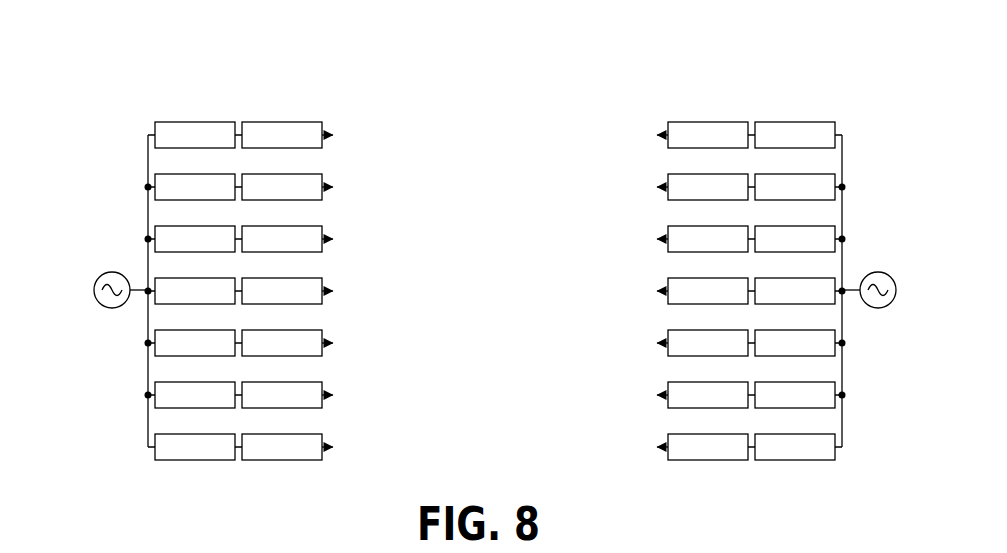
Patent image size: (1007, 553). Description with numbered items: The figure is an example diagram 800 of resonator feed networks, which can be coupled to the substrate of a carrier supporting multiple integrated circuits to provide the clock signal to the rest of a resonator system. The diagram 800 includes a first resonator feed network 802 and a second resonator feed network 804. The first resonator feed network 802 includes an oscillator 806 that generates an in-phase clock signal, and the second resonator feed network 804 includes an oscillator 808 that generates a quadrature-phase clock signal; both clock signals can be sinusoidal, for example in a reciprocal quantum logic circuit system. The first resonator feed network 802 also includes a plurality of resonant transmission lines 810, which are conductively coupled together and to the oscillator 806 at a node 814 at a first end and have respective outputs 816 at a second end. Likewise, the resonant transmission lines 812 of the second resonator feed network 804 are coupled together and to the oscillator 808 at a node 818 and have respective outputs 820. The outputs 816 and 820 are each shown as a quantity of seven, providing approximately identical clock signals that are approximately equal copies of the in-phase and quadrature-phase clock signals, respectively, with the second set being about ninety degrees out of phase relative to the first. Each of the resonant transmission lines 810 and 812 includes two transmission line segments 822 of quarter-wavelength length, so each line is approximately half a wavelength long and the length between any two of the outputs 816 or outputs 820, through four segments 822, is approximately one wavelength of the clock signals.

The diagram 800 is at (123, 41).
The first resonator feed network 802 is at (364, 71).
The second resonator feed network 804 is at (621, 71).
The oscillator 806 is at (112, 308).
The oscillator 808 is at (878, 308).
The resonant transmission lines 810 is at (238, 94).
The resonant transmission lines 812 is at (753, 95).
The node 814 is at (148, 213).
The outputs 816 is at (419, 164).
The node 818 is at (843, 210).
The outputs 820 is at (573, 380).
The transmission line segments 822 is at (187, 121).